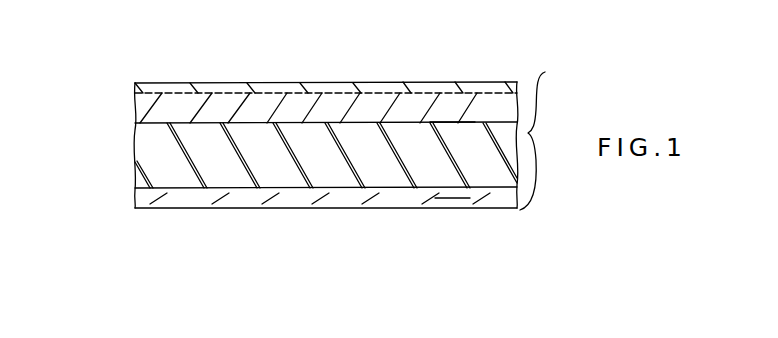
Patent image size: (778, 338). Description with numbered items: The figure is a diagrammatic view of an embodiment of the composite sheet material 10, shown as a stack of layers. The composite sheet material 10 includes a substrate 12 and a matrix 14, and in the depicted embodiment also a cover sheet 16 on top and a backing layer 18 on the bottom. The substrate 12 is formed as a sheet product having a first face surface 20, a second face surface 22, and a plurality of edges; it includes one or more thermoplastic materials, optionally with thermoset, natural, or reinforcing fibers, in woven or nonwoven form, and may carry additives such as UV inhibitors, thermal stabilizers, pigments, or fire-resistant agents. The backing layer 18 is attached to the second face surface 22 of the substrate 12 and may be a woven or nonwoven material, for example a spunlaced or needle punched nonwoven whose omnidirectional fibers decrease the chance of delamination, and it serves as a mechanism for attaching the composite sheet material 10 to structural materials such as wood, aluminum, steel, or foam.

The composite sheet material 10 is at (544, 141).
The substrate 12 is at (143, 155).
The matrix 14 is at (140, 110).
The cover sheet 16 is at (137, 90).
The backing layer 18 is at (137, 200).
The first face surface 20 is at (452, 122).
The second face surface 22 is at (452, 198).